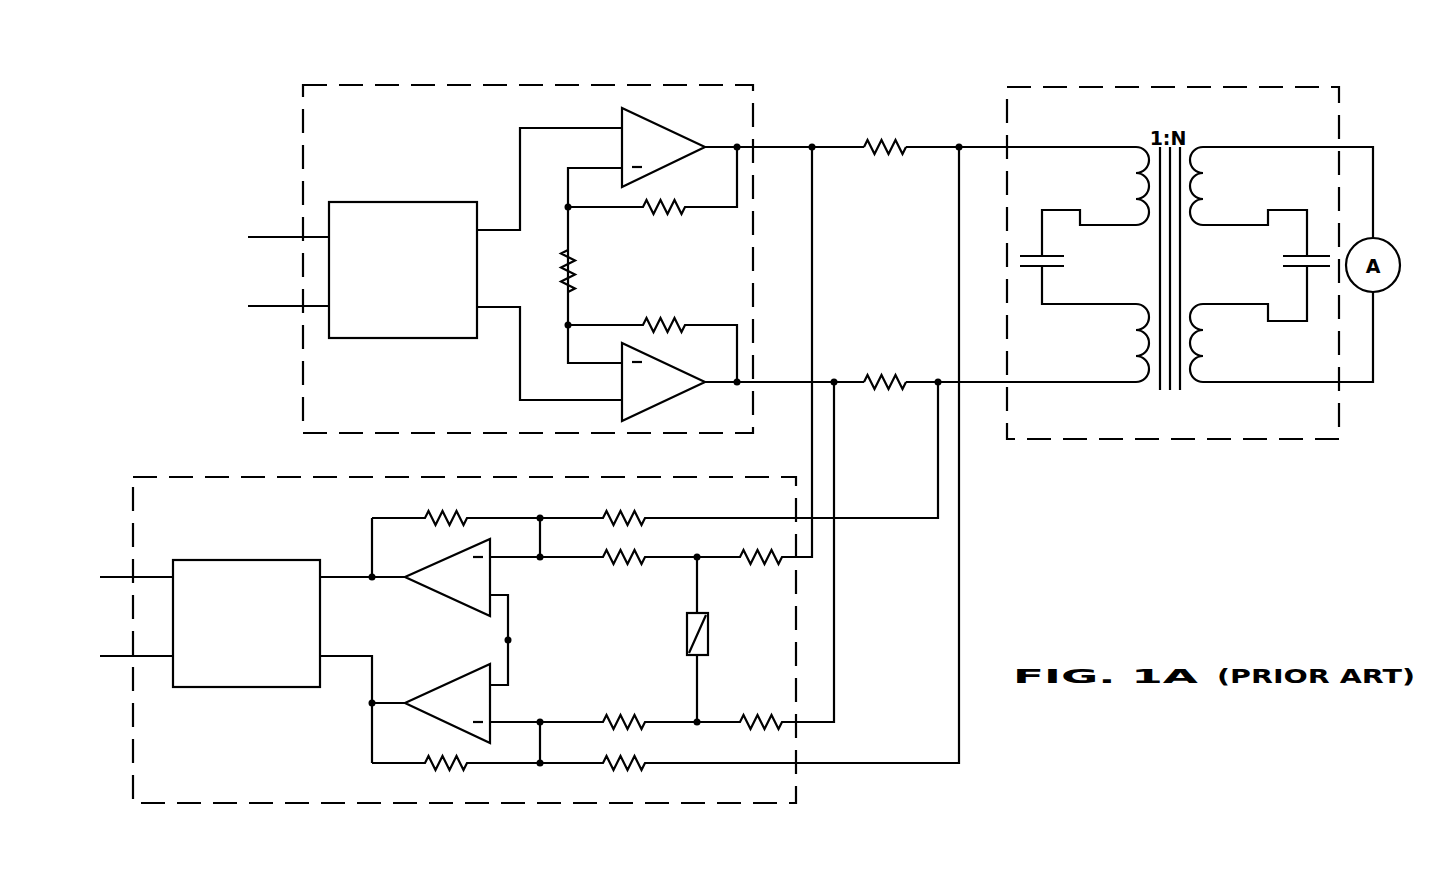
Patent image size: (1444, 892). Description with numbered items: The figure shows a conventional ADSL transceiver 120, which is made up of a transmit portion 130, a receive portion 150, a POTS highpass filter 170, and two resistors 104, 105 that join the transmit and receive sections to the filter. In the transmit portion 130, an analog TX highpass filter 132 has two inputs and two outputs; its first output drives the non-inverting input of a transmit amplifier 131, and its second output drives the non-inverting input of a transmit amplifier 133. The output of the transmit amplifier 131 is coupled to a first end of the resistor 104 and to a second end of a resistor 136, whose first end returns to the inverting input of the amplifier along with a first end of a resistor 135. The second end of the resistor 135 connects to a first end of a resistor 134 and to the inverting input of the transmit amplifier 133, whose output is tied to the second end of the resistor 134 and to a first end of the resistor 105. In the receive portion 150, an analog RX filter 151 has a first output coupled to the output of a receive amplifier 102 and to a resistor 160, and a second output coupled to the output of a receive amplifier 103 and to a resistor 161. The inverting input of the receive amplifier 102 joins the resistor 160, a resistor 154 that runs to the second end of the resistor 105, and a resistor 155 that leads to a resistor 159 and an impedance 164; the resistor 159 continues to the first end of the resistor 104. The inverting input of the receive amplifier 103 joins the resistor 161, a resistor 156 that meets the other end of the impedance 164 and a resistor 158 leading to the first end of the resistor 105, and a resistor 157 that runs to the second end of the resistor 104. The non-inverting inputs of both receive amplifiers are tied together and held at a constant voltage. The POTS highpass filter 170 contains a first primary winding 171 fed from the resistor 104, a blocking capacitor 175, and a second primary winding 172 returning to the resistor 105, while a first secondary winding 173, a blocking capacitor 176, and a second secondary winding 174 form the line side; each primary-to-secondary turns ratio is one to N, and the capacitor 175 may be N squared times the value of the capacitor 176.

The ADSL transceiver 120 is at (851, 47).
The resistor 104 is at (889, 121).
The resistor 105 is at (889, 364).
The transmit portion 130 is at (705, 115).
The transmit amplifier 131 is at (637, 159).
The analog transmit (TX) highpass filter 132 is at (438, 335).
The transmit amplifier 133 is at (637, 395).
The resistor 134 is at (659, 310).
The resistor 135 is at (588, 265).
The resistor 136 is at (668, 223).
The receive portion 150 is at (182, 512).
The analog receive (RX) filter 151 is at (282, 682).
The receive amplifier 102 is at (443, 590).
The receive amplifier 103 is at (443, 715).
The resistor 154 is at (627, 507).
The resistor 155 is at (633, 575).
The resistor 156 is at (623, 708).
The resistor 157 is at (635, 777).
The resistor 158 is at (763, 710).
The resistor 159 is at (767, 577).
The resistor 160 is at (446, 507).
The resistor 161 is at (448, 775).
The impedance 164 is at (720, 631).
The POTS highpass filter 170 is at (1295, 432).
The first primary winding 171 is at (1130, 174).
The second primary winding 172 is at (1130, 333).
The first secondary winding 173 is at (1210, 175).
The second secondary winding 174 is at (1210, 333).
The blocking capacitor 175 is at (1076, 263).
The blocking capacitor 176 is at (1285, 257).